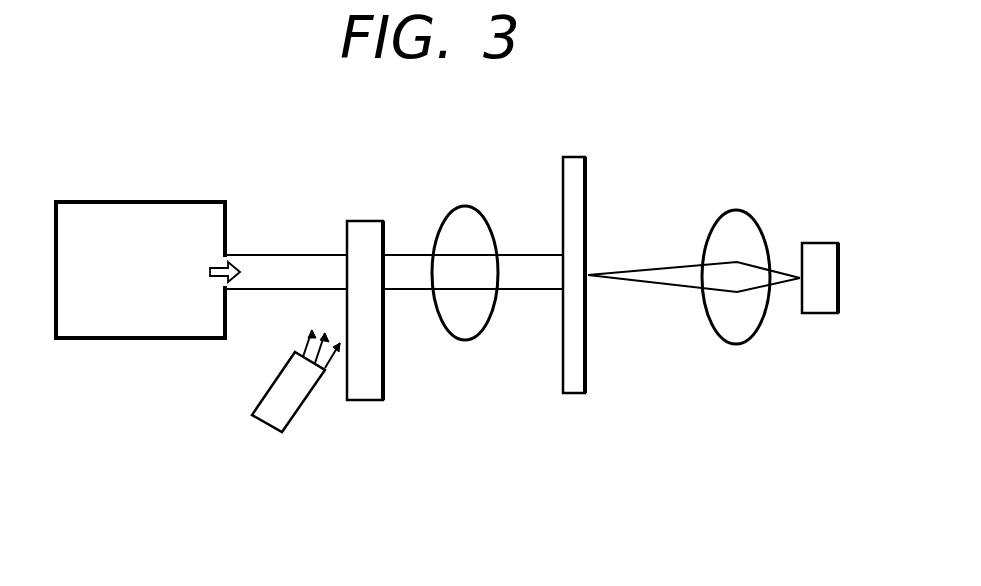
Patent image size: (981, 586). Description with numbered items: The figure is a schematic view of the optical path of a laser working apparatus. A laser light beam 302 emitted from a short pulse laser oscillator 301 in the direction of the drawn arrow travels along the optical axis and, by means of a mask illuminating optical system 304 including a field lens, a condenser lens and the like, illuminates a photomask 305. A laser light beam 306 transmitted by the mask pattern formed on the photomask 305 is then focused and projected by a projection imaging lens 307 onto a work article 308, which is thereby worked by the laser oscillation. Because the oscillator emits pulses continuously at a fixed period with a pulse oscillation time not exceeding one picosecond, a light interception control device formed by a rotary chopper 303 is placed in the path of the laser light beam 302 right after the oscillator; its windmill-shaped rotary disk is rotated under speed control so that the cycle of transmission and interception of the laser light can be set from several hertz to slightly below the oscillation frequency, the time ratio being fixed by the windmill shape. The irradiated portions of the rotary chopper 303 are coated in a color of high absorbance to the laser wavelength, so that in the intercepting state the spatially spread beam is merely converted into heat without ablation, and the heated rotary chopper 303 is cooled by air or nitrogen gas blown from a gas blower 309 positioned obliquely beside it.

The short pulse laser oscillator 301 is at (180, 342).
The laser light beam 302 is at (262, 253).
The rotary chopper 303 is at (373, 403).
The mask illuminating optical system 304 is at (465, 207).
The photomask 305 is at (585, 377).
The laser light beam transmitted by the mask pattern 306 is at (640, 270).
The projection imaging lens 307 is at (740, 345).
The work article 308 is at (822, 243).
The gas blower 309 is at (270, 427).